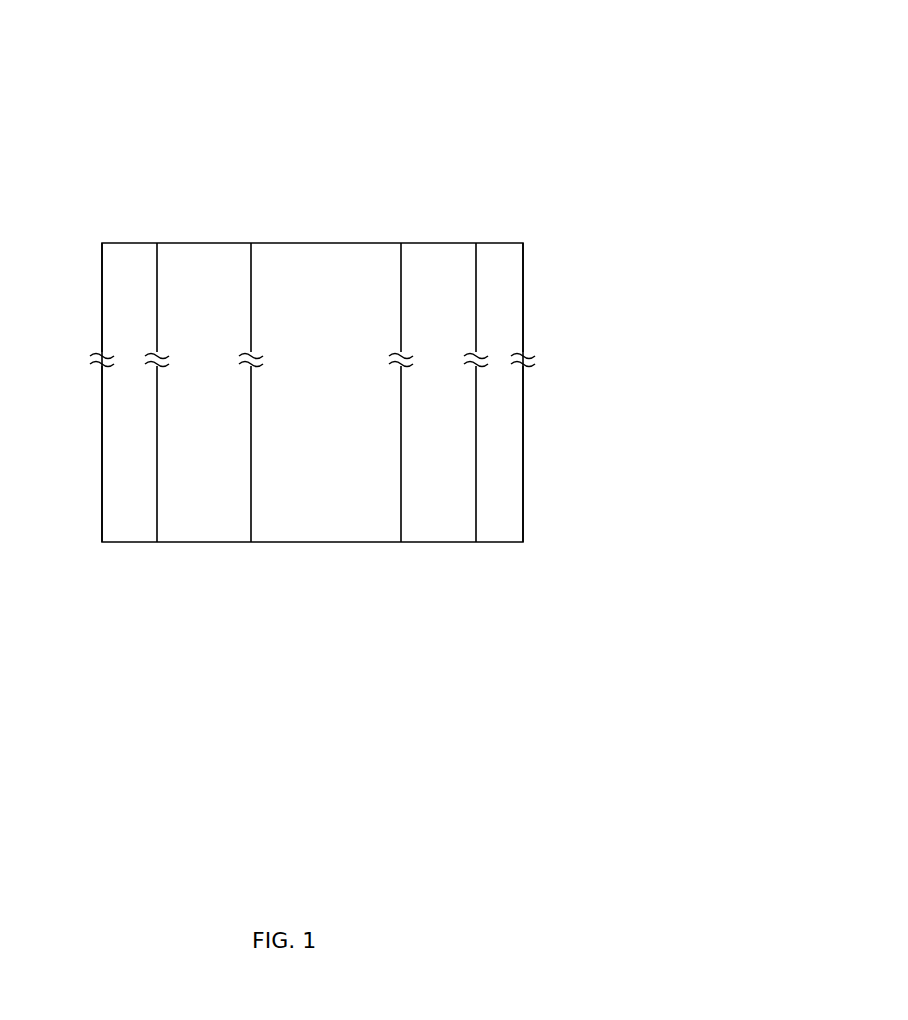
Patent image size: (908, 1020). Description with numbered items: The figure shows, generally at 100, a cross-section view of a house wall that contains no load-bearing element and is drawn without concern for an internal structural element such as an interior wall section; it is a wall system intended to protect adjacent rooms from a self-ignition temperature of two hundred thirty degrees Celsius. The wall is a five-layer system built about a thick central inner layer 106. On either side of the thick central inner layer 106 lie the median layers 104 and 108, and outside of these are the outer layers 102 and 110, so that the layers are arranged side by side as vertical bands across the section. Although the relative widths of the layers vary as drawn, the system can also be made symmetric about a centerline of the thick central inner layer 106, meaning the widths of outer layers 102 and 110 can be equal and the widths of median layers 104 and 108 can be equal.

The house wall cross-section 100 is at (801, 82).
The outer layer 102 is at (157, 578).
The median layer 104 is at (249, 578).
The thick central inner layer 106 is at (253, 578).
The median layer 108 is at (403, 578).
The outer layer 110 is at (478, 578).